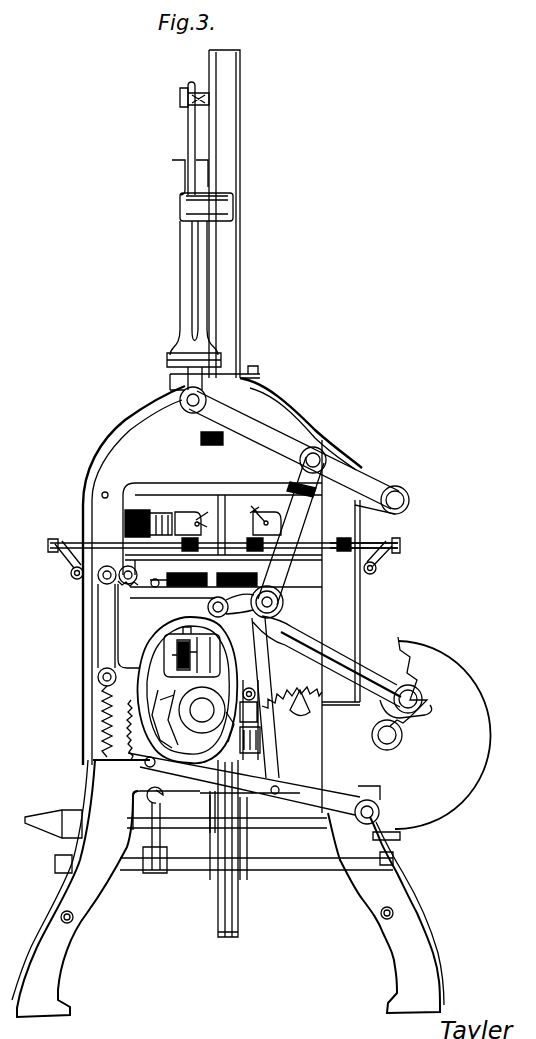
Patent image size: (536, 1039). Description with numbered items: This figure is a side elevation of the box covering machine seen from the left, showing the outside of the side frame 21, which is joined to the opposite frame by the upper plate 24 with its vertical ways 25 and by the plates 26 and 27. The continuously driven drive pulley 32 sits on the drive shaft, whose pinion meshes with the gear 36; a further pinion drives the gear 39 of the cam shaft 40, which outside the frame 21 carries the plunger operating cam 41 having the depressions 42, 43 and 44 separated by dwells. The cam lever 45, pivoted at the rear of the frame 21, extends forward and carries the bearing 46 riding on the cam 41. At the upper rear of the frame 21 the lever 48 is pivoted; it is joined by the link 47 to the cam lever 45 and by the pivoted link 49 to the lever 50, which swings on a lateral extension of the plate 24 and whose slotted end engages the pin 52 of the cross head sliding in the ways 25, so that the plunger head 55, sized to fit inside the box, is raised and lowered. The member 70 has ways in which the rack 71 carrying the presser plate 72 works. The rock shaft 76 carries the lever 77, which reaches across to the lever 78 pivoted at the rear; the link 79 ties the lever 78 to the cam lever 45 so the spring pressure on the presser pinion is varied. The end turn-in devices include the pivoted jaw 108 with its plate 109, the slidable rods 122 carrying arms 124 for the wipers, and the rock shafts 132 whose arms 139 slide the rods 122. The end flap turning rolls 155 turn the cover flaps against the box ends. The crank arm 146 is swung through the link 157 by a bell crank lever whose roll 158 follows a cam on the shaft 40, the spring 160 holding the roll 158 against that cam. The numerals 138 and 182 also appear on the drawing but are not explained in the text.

The side frame 21 is at (96, 892).
The upper plate 24 is at (260, 373).
The vertical ways 25 is at (232, 108).
The plate 26 is at (137, 485).
The plate 27 is at (124, 556).
The drive pulley 32 is at (476, 698).
The gear 36 is at (338, 710).
The gear 39 is at (143, 766).
The cam shaft 40 is at (200, 708).
The plunger operating cam 41 is at (170, 636).
The depression 42 is at (140, 662).
The depression 43 is at (196, 757).
The depression 44 is at (233, 725).
The cam lever 45 is at (376, 678).
The bearing 46 is at (230, 614).
The link 47 is at (288, 568).
The lever 48 is at (282, 426).
The pivoted link 49 is at (186, 262).
The lever 50 is at (188, 131).
The pin 52 is at (180, 98).
The plunger head 55 is at (203, 440).
The member 70 is at (239, 891).
The rack 71 is at (226, 502).
The presser plate 72 is at (213, 480).
The rock shaft 76 is at (196, 870).
The lever 77 is at (162, 838).
The lever 78 is at (297, 796).
The link 79 is at (279, 772).
The jaw 108 is at (264, 512).
The plate 109 is at (197, 512).
The slidable rod 122 is at (50, 545).
The arm 124 is at (196, 546).
The rock shaft 132 is at (401, 544).
The roller 138 is at (71, 574).
The arm 139 is at (377, 568).
The crank arm 146 is at (122, 568).
The end flap turning roll 155 is at (190, 588).
The link 157 is at (99, 606).
The roll 158 is at (129, 666).
The spring 160 is at (103, 718).
The shaft 182 is at (257, 692).